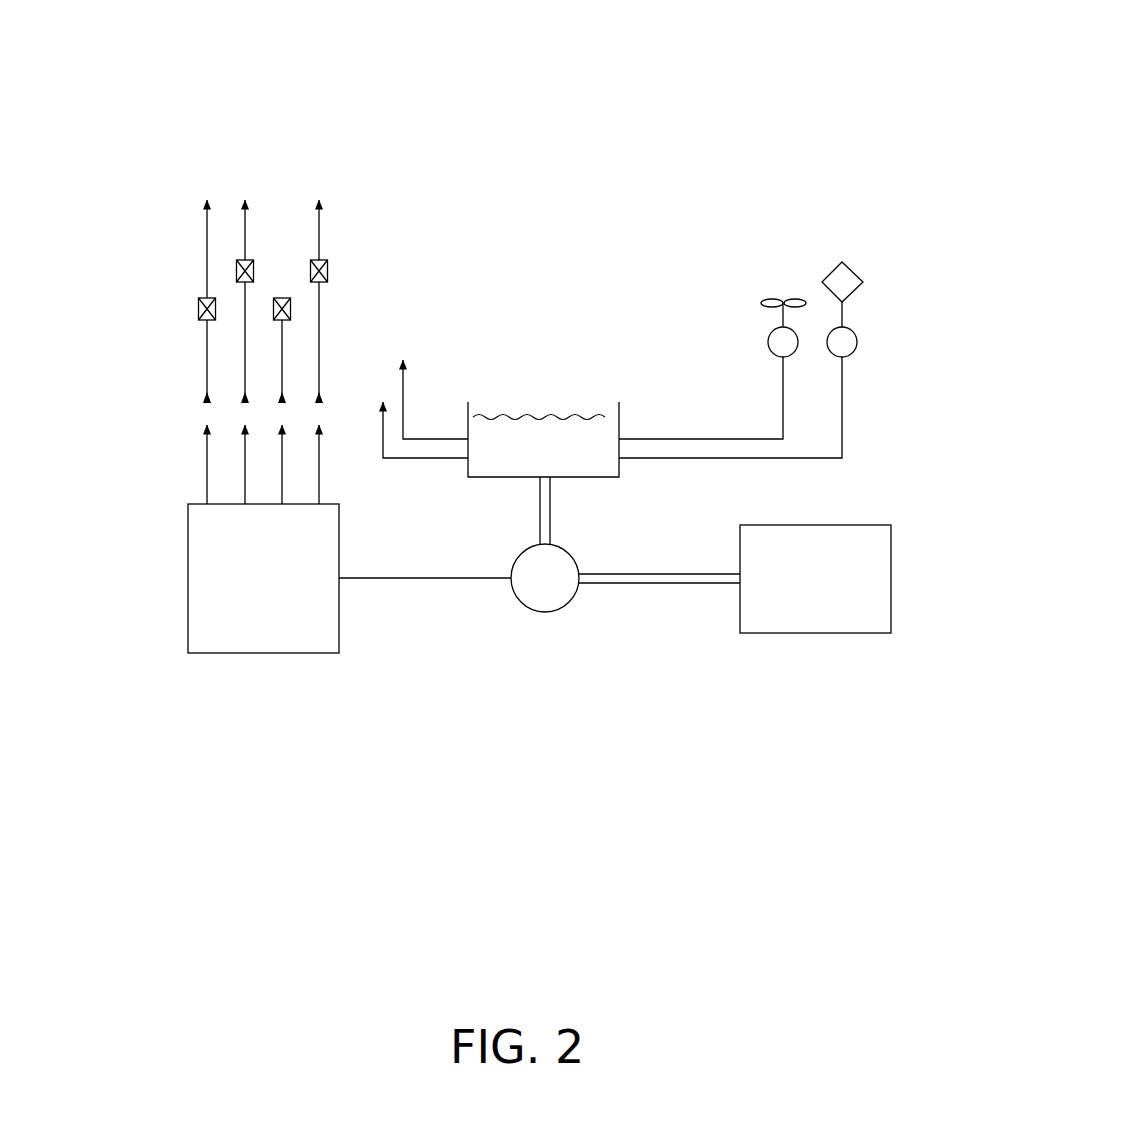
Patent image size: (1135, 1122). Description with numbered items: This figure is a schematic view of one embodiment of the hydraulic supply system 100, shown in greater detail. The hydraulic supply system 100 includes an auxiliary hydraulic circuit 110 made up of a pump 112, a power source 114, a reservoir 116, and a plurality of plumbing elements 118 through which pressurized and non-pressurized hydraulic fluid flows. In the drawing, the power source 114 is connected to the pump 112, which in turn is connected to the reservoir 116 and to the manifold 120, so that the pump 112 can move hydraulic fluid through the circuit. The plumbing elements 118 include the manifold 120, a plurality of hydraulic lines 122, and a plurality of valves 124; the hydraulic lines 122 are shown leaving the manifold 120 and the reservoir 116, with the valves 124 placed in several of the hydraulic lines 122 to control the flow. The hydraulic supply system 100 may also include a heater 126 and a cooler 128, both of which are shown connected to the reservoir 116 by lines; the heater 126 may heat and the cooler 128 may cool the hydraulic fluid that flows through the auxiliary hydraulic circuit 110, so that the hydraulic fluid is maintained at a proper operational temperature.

The hydraulic supply system 100 is at (713, 53).
The auxiliary hydraulic circuit 110 is at (880, 492).
The pump 112 is at (543, 612).
The power source 114 is at (866, 633).
The reservoir 116 is at (622, 426).
The plumbing elements 118 is at (108, 357).
The manifold 120 is at (316, 654).
The hydraulic lines 122 is at (245, 372).
The valves 124 is at (290, 308).
The heater 126 is at (875, 332).
The cooler 128 is at (750, 332).